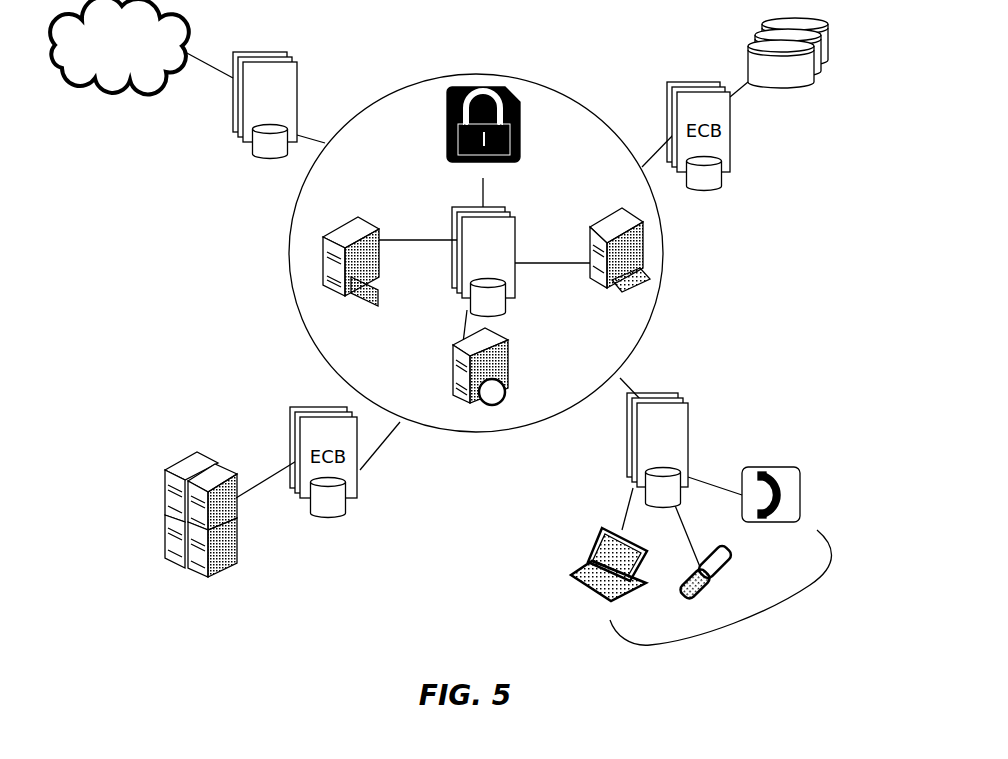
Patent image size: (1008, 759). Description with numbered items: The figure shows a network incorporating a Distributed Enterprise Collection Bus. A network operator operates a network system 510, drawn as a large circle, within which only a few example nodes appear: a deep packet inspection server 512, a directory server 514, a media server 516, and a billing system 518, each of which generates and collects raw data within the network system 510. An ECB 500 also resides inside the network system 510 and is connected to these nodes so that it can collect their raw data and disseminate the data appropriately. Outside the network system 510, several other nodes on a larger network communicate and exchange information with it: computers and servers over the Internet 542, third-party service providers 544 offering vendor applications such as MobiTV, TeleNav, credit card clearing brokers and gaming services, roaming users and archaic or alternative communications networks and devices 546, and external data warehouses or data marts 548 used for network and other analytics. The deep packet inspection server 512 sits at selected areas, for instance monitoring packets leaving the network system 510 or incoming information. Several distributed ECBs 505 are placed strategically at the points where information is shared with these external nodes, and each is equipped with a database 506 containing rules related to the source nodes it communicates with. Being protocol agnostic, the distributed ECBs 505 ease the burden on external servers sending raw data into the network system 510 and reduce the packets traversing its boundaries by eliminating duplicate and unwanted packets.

The ECB 500 is at (515, 222).
The distributed ECBs 505 is at (264, 42).
The databases 506 is at (253, 158).
The network system 510 is at (482, 75).
The deep packet inspection server 512 is at (525, 145).
The directory server 514 is at (628, 292).
The media server 516 is at (452, 387).
The billing system 518 is at (345, 220).
The Internet 542 is at (115, 90).
The third-party service providers 544 is at (188, 455).
The roaming users and/or archaic/alternative communications networks/devices 546 is at (730, 622).
The external data warehouses or data marts 548 is at (833, 43).